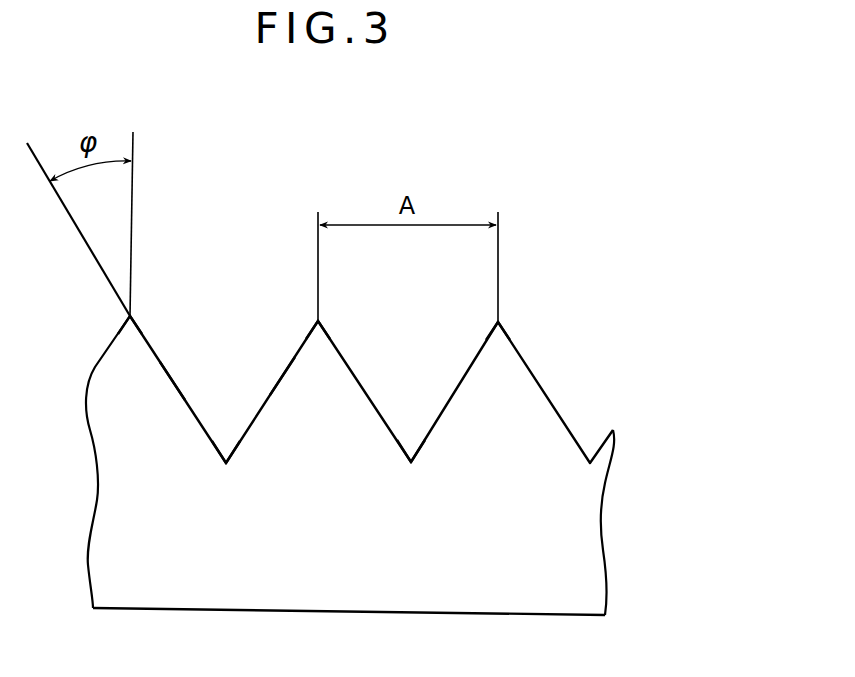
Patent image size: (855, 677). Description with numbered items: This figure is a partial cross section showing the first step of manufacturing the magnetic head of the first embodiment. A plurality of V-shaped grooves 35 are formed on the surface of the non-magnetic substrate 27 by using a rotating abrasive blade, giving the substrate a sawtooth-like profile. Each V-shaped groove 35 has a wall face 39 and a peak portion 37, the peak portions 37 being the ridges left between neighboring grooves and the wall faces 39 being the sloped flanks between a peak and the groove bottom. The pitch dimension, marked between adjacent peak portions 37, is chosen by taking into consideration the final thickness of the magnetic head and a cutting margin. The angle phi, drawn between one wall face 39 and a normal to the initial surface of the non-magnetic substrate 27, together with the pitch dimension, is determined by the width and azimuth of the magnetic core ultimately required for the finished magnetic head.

The non-magnetic substrate 27 is at (605, 553).
The V-shaped groove 35 is at (243, 377).
The peak portion 37 is at (126, 317).
The wall face 39 is at (177, 383).